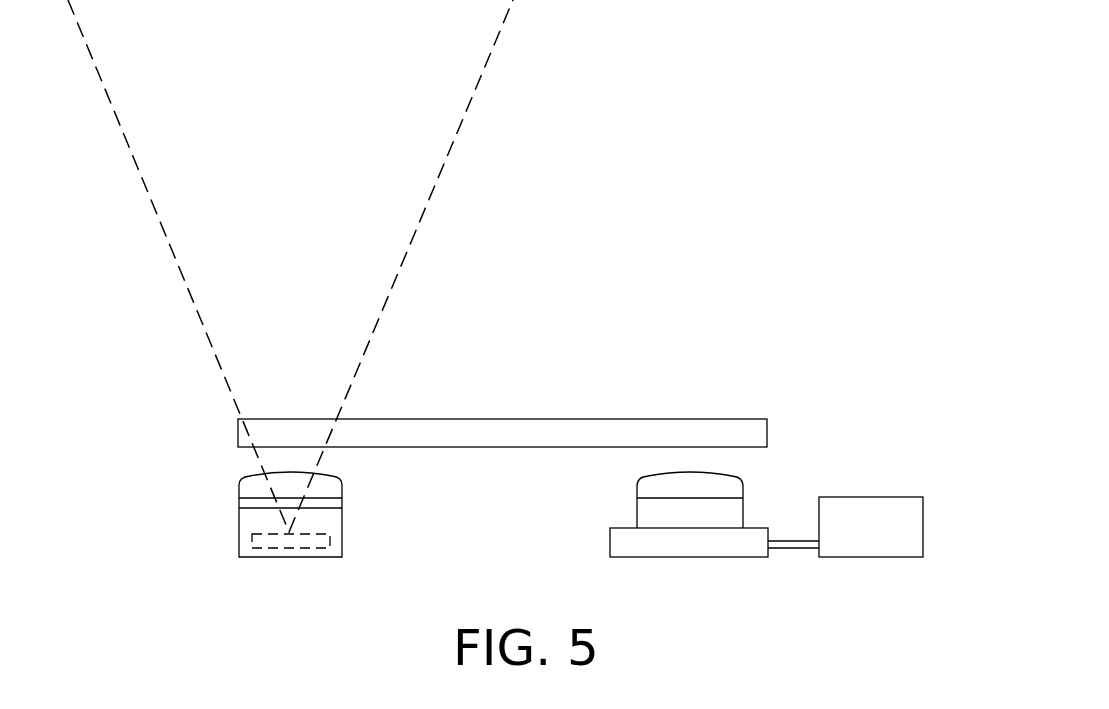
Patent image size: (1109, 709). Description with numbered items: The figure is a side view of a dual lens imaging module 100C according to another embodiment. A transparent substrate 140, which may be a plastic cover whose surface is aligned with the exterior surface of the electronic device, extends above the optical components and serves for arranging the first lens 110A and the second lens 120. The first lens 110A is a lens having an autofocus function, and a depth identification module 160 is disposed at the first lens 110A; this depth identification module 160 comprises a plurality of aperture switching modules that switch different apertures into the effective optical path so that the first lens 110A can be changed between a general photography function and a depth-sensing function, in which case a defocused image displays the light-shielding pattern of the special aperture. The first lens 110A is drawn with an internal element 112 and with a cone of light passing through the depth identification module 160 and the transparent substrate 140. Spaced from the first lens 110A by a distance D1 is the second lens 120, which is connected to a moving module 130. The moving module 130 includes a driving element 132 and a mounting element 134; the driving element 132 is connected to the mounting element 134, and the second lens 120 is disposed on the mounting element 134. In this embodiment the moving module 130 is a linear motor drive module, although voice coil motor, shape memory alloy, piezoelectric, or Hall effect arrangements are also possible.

The dual lens imaging module 100C is at (986, 632).
The first lens 110A is at (239, 527).
The light emitting element 112 is at (299, 550).
The second lens 120 is at (661, 518).
The moving module 130 is at (783, 520).
The driving element 132 is at (872, 545).
The mounting element 134 is at (717, 545).
The transparent substrate 140 is at (758, 434).
The depth identification module 160 is at (248, 504).
The distance D1 is at (356, 511).